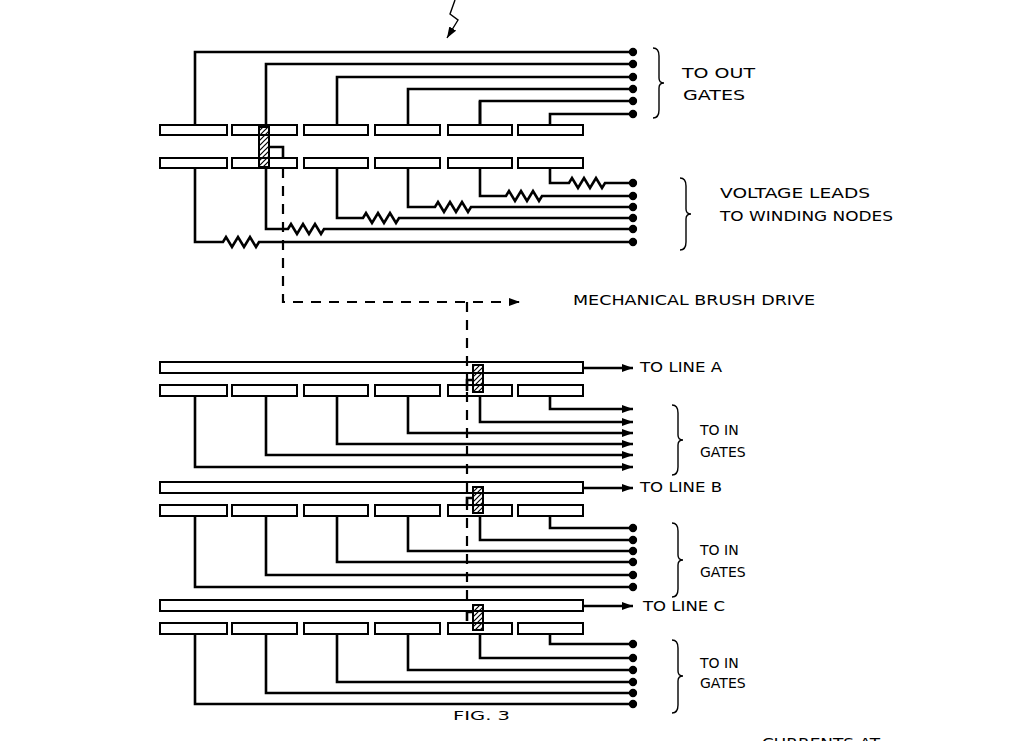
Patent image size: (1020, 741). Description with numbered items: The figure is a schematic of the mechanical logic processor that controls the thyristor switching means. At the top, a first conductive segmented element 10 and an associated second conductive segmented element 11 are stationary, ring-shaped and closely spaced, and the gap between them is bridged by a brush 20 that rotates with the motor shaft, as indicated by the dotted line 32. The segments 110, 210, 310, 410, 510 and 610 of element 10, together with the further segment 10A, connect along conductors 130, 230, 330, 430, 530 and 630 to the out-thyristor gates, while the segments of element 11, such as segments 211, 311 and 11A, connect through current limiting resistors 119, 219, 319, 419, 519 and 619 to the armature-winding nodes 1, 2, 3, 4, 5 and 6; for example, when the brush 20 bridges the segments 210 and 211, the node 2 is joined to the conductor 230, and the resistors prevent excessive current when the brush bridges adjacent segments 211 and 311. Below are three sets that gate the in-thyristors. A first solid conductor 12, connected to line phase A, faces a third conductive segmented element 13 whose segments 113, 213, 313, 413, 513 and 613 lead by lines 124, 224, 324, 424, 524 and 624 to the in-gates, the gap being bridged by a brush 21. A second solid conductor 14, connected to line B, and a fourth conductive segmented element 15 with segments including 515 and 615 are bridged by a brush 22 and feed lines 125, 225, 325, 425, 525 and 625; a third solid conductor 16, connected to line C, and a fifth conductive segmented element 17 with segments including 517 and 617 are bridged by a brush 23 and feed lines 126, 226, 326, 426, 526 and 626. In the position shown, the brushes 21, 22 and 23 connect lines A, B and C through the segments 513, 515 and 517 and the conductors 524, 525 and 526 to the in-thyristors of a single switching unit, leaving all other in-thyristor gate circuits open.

The first conductive segmented element 10 is at (152, 130).
The second conductive segmented element 11 is at (152, 165).
The first solid conductor 12 is at (152, 368).
The third conductive segmented element 13 is at (152, 391).
The solid conductor 14 is at (152, 488).
The fourth conductive segmented element 15 is at (152, 511).
The solid conductor 16 is at (152, 606).
The fifth conductive segmented element 17 is at (152, 629).
The brush 20 is at (246, 167).
The brush 21 is at (487, 362).
The brush 22 is at (452, 517).
The brush 23 is at (486, 630).
The dotted line 32 is at (401, 387).
The segment 110 is at (193, 116).
The segment 210 is at (271, 116).
The segment 310 is at (340, 116).
The segment 410 is at (407, 116).
The segment 510 is at (489, 121).
The segment 610 is at (550, 139).
The segment tap 10A is at (465, 111).
The segment 11A is at (480, 153).
The segment 211 is at (274, 182).
The segment 311 is at (342, 182).
The conductor 130 is at (421, 67).
The conductor 230 is at (473, 75).
The conductor 330 is at (487, 70).
The conductor 430 is at (522, 70).
The conductor 530 is at (558, 122).
The conductor 630 is at (618, 128).
The current limiting resistor 119 is at (414, 219).
The current limiting resistor 219 is at (449, 217).
The current limiting resistor 319 is at (485, 217).
The current limiting resistor 419 is at (520, 190).
The current limiting resistor 519 is at (556, 184).
The current limiting resistor 619 is at (594, 172).
The armature-winding node 1 is at (652, 243).
The armature-winding node 2 is at (641, 230).
The armature-winding node 3 is at (651, 219).
The armature-winding node 4 is at (641, 206).
The armature-winding node 5 is at (651, 195).
The armature-winding node 6 is at (641, 183).
The segment 113 is at (189, 408).
The segment 213 is at (256, 408).
The segment 313 is at (327, 408).
The segment 413 is at (399, 408).
The segment 513 is at (467, 408).
The segment 613 is at (572, 392).
The line 124 is at (430, 435).
The line 224 is at (466, 429).
The line 324 is at (501, 423).
The line 424 is at (537, 418).
The conductor 524 is at (573, 412).
The line 624 is at (608, 406).
The segment 515 is at (483, 521).
The segment 615 is at (574, 508).
The line 125 is at (430, 555).
The line 225 is at (466, 549).
The line 325 is at (501, 543).
The line 425 is at (537, 538).
The conductor 525 is at (573, 532).
The line 625 is at (608, 526).
The segment 517 is at (471, 645).
The segment 617 is at (574, 629).
The line 126 is at (430, 672).
The line 226 is at (466, 667).
The line 326 is at (501, 661).
The line 426 is at (537, 655).
The conductor 526 is at (573, 649).
The line 626 is at (608, 643).